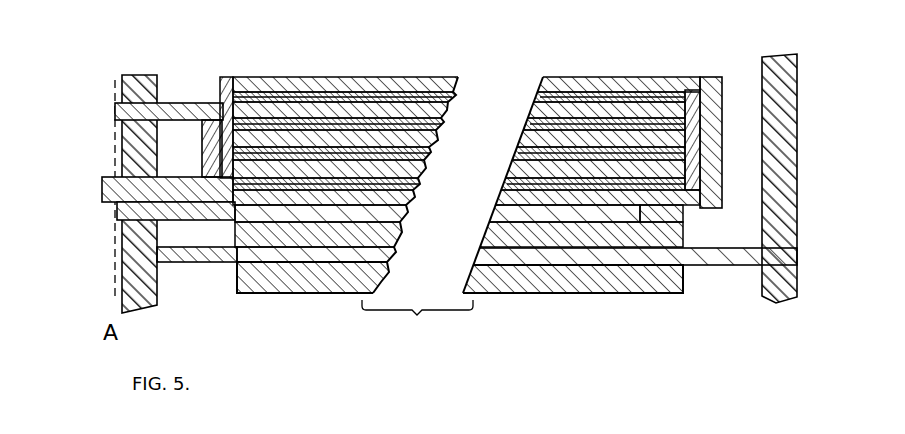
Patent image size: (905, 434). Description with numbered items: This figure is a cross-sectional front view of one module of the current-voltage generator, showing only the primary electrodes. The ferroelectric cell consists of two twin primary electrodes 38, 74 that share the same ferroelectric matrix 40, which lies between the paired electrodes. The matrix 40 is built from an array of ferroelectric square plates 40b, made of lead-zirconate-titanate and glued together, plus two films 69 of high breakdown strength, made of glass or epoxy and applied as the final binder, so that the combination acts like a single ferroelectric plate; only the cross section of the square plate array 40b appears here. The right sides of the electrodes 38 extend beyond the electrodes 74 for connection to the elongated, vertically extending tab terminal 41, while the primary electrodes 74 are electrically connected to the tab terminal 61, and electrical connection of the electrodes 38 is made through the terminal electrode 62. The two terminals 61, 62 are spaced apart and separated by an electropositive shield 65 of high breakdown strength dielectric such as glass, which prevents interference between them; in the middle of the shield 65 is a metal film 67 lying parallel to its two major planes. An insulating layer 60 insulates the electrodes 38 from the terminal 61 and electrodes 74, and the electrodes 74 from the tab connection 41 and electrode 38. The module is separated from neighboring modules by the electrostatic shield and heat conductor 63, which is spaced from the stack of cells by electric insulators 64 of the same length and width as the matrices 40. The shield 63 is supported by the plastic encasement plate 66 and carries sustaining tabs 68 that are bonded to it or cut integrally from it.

The primary electrode 38 is at (408, 175).
The ferroelectric matrix 40 is at (323, 92).
The ferroelectric square plate array 40b is at (288, 158).
The tab terminal 41 is at (703, 90).
The insulating layer 60 is at (223, 142).
The tab terminal 61 is at (155, 110).
The terminal electrode 62 is at (147, 212).
The electrostatic shield and heat conductor 63 is at (330, 257).
The electric insulator 64 is at (640, 238).
The electropositive shield 65 is at (140, 187).
The plastic encasement plate 66 is at (783, 120).
The metal film 67 is at (180, 186).
The sustaining tab 68 is at (788, 262).
The film of high breakdown strength 69 is at (536, 103).
The primary electrode 74 is at (567, 170).